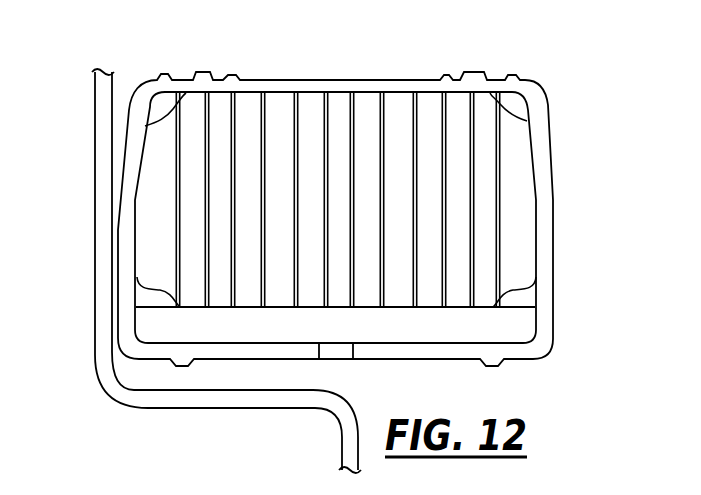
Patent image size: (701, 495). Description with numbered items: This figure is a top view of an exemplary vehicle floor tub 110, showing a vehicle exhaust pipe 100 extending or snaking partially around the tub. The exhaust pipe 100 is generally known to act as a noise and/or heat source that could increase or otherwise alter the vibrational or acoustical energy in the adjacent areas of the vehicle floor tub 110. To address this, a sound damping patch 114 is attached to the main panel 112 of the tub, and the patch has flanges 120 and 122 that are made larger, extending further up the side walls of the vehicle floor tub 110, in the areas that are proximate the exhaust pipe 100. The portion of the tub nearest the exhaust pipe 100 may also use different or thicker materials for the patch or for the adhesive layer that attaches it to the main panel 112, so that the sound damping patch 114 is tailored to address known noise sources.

The vehicle exhaust pipe 100 is at (103, 149).
The vehicle floor tub 110 is at (565, 92).
The main panel 112 is at (523, 323).
The sound damping patch 114 is at (515, 178).
The flange 120 is at (147, 150).
The flange 122 is at (423, 308).